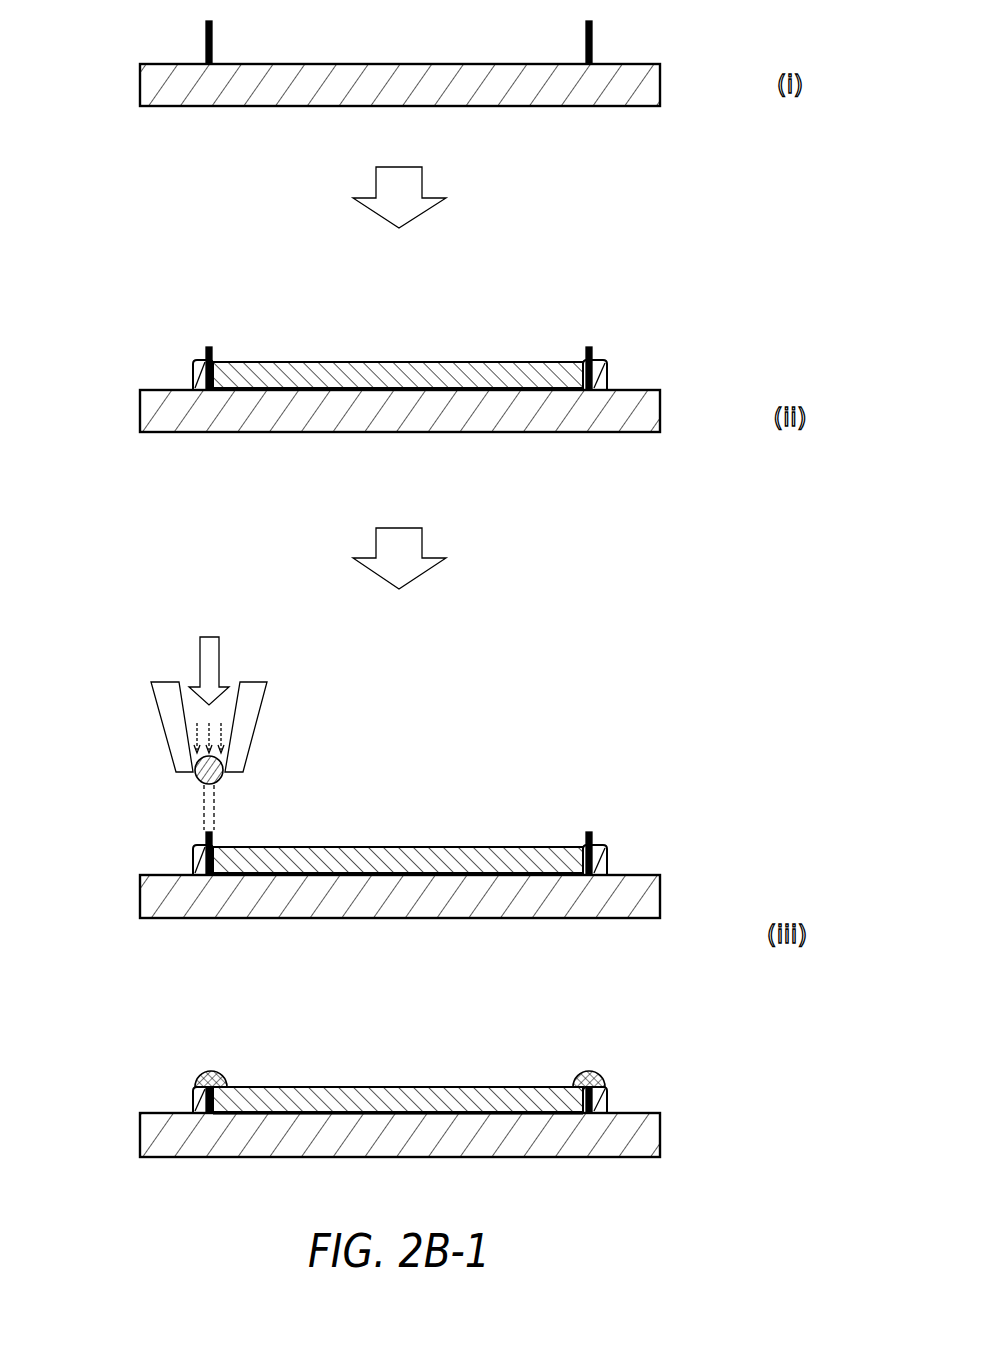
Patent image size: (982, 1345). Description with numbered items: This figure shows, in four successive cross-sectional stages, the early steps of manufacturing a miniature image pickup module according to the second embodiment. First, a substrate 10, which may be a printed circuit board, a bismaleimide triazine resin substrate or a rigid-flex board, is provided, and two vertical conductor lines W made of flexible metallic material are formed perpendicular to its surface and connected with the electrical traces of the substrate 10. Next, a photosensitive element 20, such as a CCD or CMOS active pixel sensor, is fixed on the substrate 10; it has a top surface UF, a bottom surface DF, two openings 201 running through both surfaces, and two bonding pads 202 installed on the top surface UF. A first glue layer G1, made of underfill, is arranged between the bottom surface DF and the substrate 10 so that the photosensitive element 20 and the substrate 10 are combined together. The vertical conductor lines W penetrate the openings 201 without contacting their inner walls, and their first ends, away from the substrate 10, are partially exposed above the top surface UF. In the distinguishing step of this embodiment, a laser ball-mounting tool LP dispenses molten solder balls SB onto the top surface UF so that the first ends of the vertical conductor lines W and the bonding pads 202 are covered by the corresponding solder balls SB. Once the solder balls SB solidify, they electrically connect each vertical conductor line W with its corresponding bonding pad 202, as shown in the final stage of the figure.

The substrate 10 is at (148, 79).
The photosensitive element 20 is at (438, 363).
The opening 201 is at (592, 360).
The bonding pad 202 is at (215, 358).
The vertical conductor line W is at (593, 31).
The top surface UF is at (341, 362).
The bottom surface DF is at (492, 391).
The first glue layer G1 is at (265, 391).
The laser ball-mounting tool LP is at (245, 712).
The solder ball SB is at (196, 780).